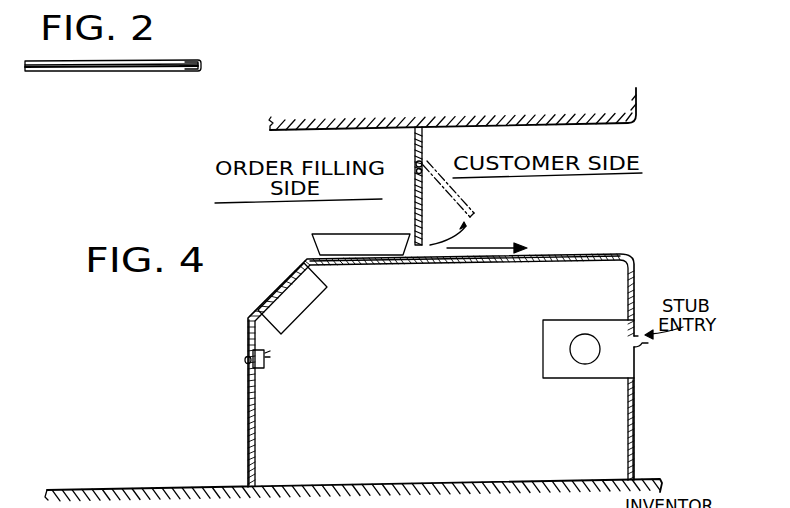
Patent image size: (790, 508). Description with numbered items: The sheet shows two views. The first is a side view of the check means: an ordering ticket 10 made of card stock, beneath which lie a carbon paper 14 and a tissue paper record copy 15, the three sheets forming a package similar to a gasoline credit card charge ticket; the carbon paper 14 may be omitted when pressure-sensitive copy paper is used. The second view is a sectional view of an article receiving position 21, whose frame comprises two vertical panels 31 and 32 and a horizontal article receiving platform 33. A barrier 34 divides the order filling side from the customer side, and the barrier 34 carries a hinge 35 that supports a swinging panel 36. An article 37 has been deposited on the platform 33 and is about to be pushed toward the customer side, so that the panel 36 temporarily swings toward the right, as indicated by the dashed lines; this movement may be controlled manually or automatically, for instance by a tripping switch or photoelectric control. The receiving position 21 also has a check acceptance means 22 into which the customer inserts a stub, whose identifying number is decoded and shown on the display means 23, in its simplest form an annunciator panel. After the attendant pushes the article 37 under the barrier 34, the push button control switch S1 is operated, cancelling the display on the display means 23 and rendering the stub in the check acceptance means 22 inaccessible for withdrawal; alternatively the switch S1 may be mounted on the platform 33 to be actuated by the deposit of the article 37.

In FIG. 2, the ordering ticket 10 is at (192, 61).
In FIG. 2, the carbon paper 14 is at (194, 66).
In FIG. 2, the tissue paper record copy 15 is at (185, 72).
In FIG. 4, the article receiving position 21 is at (641, 271).
In FIG. 4, the check acceptance means 22 is at (553, 363).
In FIG. 4, the display means 23 is at (300, 301).
In FIG. 4, the vertical panel 31 is at (256, 440).
In FIG. 4, the vertical panel 32 is at (628, 428).
In FIG. 4, the horizontal article receiving platform 33 is at (470, 262).
In FIG. 4, the barrier 34 is at (415, 142).
In FIG. 4, the hinge 35 is at (424, 162).
In FIG. 4, the swinging panel 36 is at (415, 204).
In FIG. 4, the article 37 is at (314, 243).
In FIG. 4, the push button control switch S1 is at (262, 369).